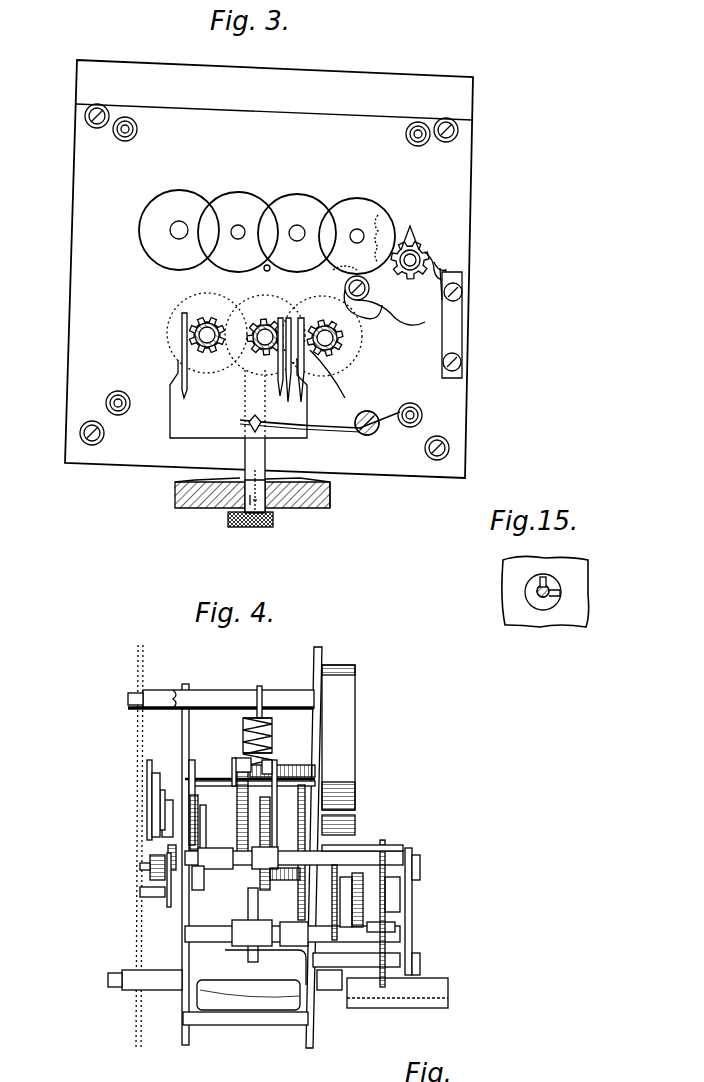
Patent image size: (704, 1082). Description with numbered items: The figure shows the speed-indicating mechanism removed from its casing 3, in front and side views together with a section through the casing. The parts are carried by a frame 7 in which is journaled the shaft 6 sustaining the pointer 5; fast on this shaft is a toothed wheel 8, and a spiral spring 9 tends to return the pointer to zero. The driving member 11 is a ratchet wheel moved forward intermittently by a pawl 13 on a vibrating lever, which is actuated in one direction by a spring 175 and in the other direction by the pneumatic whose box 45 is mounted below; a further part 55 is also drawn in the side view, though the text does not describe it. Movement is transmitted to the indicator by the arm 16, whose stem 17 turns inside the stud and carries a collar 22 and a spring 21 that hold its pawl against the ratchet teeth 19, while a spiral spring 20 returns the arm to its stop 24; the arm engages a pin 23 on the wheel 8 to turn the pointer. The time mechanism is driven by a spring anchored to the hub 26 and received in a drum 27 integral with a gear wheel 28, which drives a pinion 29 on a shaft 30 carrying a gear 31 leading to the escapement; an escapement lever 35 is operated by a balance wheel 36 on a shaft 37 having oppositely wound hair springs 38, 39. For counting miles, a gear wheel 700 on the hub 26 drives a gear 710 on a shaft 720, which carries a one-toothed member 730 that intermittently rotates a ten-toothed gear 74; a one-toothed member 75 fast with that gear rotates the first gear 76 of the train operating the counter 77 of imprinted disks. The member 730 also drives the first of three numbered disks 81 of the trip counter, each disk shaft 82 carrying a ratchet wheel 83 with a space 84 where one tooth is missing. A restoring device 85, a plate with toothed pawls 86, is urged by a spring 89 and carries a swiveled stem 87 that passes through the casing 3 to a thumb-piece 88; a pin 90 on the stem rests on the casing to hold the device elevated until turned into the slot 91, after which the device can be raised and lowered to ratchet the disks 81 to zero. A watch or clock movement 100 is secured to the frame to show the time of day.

In FIG. 3, the frame 7 is at (95, 206).
In FIG. 4, the frame 7 is at (180, 1036).
In FIG. 3, the counter 77 is at (200, 240).
In FIG. 4, the counter 77 is at (148, 790).
In FIG. 3, the first gear 76 is at (390, 222).
In FIG. 4, the first gear 76 is at (166, 800).
In FIG. 3, the member 75 is at (413, 250).
In FIG. 4, the member 75 is at (155, 795).
In FIG. 3, the gear 74 is at (438, 262).
In FIG. 4, the gear 74 is at (172, 790).
In FIG. 3, the shaft 720 is at (463, 302).
In FIG. 4, the shaft 720 is at (412, 925).
In FIG. 3, the member 730 is at (385, 303).
In FIG. 3, the numbered disks 81 is at (215, 318).
In FIG. 4, the numbered disks 81 is at (140, 866).
In FIG. 3, the shaft 82 is at (200, 350).
In FIG. 3, the ratchet wheel 83 is at (200, 318).
In FIG. 3, the space 84 is at (182, 319).
In FIG. 3, the toothed arms or pawls 86 is at (182, 355).
In FIG. 3, the restoring device 85 is at (195, 417).
In FIG. 3, the stem 87 is at (205, 508).
In FIG. 15, the stem 87 is at (535, 590).
In FIG. 3, the thumb-piece 88 is at (277, 530).
In FIG. 3, the spring 89 is at (345, 432).
In FIG. 3, the pin 90 is at (325, 508).
In FIG. 15, the pin 90 is at (553, 598).
In FIG. 3, the slot 91 is at (225, 515).
In FIG. 15, the slot 91 is at (548, 582).
In FIG. 3, the casing 3 is at (330, 508).
In FIG. 15, the casing 3 is at (580, 592).
In FIG. 4, the watch or clock movement 100 is at (348, 682).
In FIG. 4, the gear wheel 700 is at (315, 745).
In FIG. 4, the spring 175 is at (260, 688).
In FIG. 4, the stem 17 is at (312, 770).
In FIG. 4, the spring 21 is at (320, 790).
In FIG. 4, the collar 22 is at (272, 840).
In FIG. 4, the barrel or drum 27 is at (310, 780).
In FIG. 4, the gear wheel 28 is at (305, 800).
In FIG. 4, the spiral spring 20 is at (238, 760).
In FIG. 4, the ratchet teeth 19 is at (222, 740).
In FIG. 4, the driving member 11 is at (240, 755).
In FIG. 4, the hub 26 is at (270, 762).
In FIG. 4, the toothed wheel 8 is at (199, 816).
In FIG. 4, the spiral spring 9 is at (207, 827).
In FIG. 4, the pointer 5 is at (158, 810).
In FIG. 4, the shaft 6 is at (140, 832).
In FIG. 4, the arm 16 is at (215, 872).
In FIG. 4, the pin 23 is at (192, 880).
In FIG. 4, the pawl 13 is at (270, 876).
In FIG. 4, the stop 24 is at (248, 935).
In FIG. 4, the gear 710 is at (175, 985).
In FIG. 4, the box 45 is at (225, 985).
In FIG. 4, the pinion 29 is at (240, 1000).
In FIG. 4, the shaft 30 is at (305, 945).
In FIG. 4, the gear 31 is at (380, 1005).
In FIG. 4, the shaft 55 is at (428, 990).
In FIG. 4, the hair spring 38 is at (400, 900).
In FIG. 4, the escapement lever 35 is at (400, 885).
In FIG. 4, the shaft 37 is at (370, 857).
In FIG. 4, the hair spring 39 is at (383, 842).
In FIG. 4, the balance wheel 36 is at (365, 832).